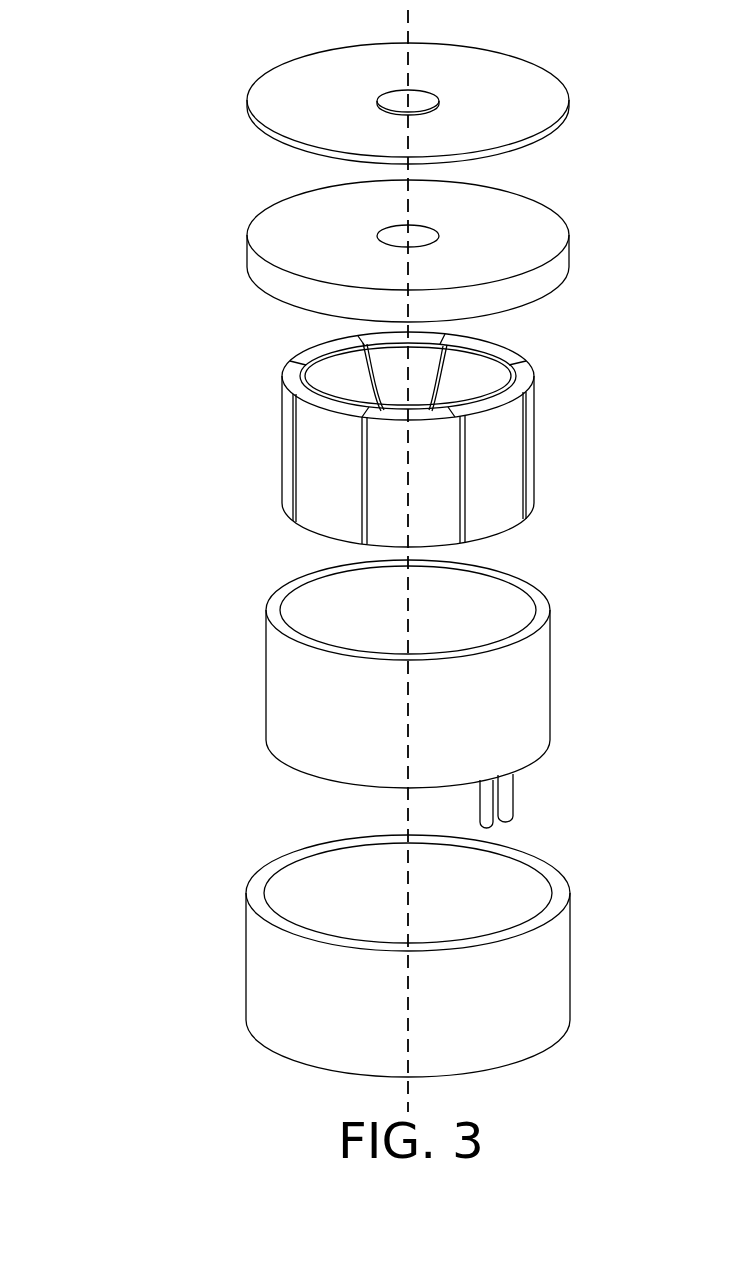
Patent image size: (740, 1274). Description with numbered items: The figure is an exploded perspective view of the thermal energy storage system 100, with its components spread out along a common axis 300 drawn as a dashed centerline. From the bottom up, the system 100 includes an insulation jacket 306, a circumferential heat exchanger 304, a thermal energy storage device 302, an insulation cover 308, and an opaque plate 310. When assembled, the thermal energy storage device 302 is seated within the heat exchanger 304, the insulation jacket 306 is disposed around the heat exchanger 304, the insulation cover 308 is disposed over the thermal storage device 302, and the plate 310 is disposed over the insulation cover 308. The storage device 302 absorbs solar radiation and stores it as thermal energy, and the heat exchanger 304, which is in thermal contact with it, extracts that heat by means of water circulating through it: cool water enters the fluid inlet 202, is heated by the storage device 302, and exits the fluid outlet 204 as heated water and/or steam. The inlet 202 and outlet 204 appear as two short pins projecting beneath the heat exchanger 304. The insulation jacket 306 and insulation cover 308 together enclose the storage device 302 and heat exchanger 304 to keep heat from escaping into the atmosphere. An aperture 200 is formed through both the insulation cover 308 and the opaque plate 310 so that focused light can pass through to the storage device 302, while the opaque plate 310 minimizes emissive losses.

The thermal energy storage system 100 is at (101, 98).
The aperture 200 is at (418, 98).
The fluid inlet 202 is at (508, 796).
The fluid outlet 204 is at (487, 795).
The axis 300 is at (407, 11).
The thermal energy storage device 302 is at (553, 393).
The heat exchanger 304 is at (536, 608).
The insulation jacket 306 is at (563, 893).
The insulation cover 308 is at (550, 237).
The opaque plate 310 is at (547, 108).